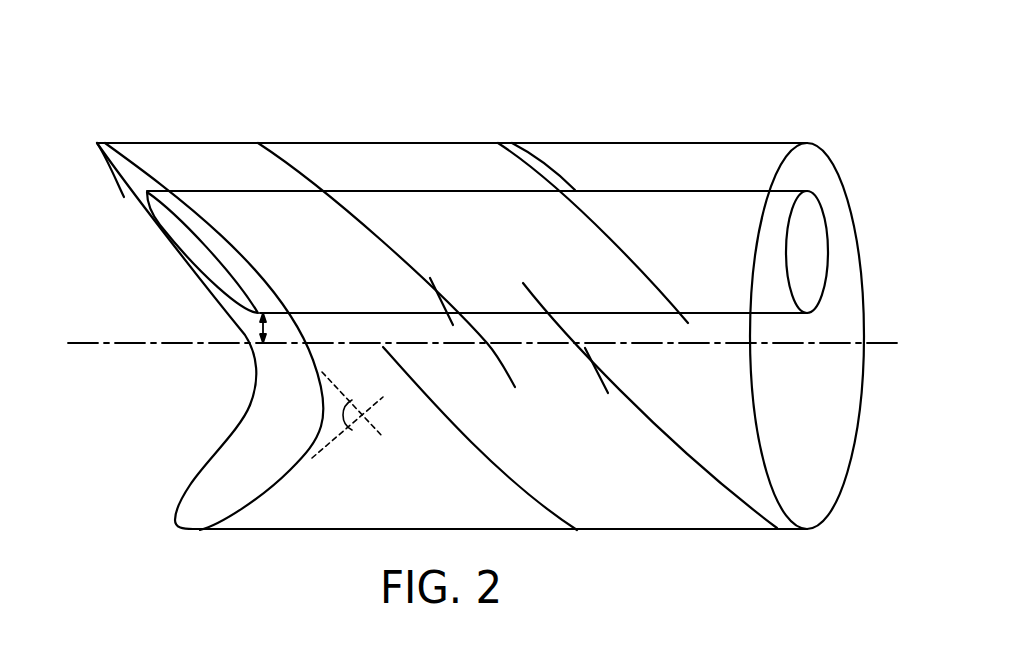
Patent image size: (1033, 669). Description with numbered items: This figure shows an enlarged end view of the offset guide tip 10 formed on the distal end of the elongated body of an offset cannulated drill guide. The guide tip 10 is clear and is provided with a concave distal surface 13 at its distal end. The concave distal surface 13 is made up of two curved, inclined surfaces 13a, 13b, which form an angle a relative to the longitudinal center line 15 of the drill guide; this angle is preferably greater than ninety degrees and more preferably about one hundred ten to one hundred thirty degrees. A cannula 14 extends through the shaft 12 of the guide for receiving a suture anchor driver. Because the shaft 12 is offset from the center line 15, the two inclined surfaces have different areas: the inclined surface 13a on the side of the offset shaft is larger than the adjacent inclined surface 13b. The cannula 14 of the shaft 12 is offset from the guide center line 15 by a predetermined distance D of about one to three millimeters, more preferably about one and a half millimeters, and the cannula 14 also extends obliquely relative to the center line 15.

The offset guide tip 10 is at (703, 114).
The shaft 12 is at (222, 170).
The concave distal surface 13 is at (265, 362).
The inclined surface 13a is at (128, 194).
The inclined surface 13b is at (205, 466).
The cannula 14 is at (191, 240).
The center line 15 is at (133, 344).
The predetermined distance D is at (274, 328).
The angle α a is at (347, 415).